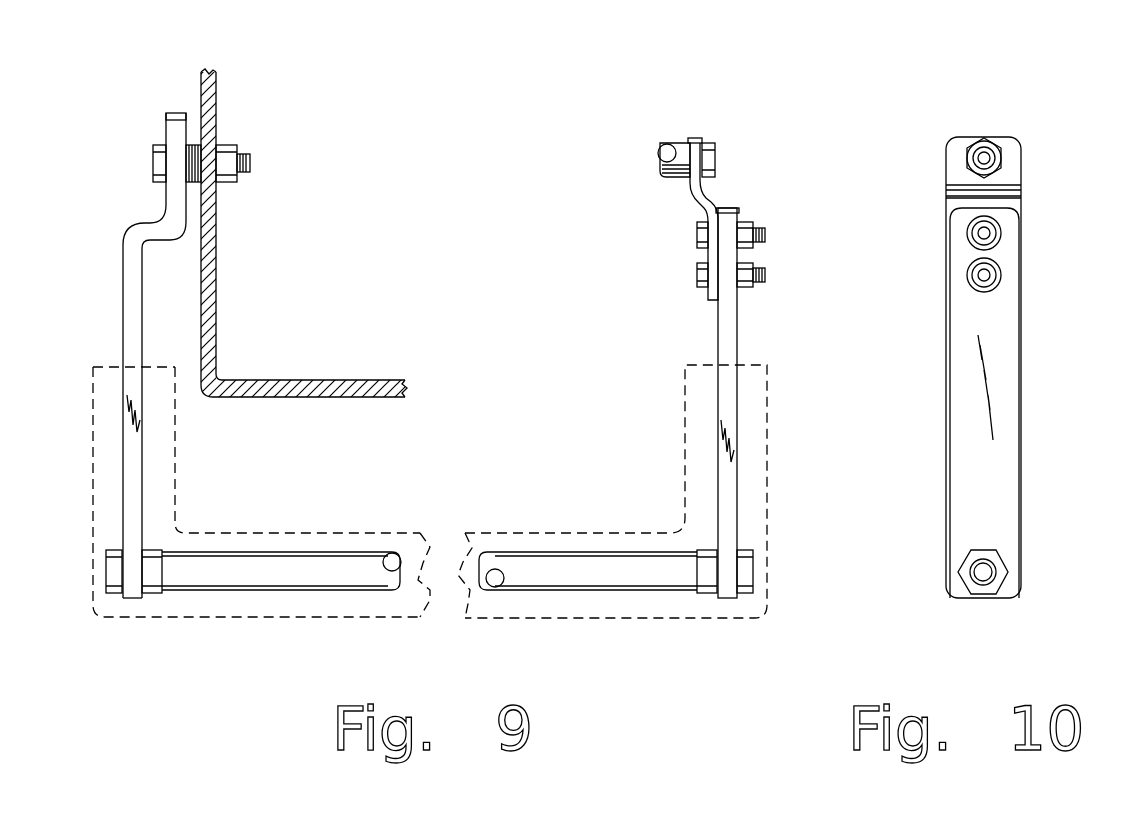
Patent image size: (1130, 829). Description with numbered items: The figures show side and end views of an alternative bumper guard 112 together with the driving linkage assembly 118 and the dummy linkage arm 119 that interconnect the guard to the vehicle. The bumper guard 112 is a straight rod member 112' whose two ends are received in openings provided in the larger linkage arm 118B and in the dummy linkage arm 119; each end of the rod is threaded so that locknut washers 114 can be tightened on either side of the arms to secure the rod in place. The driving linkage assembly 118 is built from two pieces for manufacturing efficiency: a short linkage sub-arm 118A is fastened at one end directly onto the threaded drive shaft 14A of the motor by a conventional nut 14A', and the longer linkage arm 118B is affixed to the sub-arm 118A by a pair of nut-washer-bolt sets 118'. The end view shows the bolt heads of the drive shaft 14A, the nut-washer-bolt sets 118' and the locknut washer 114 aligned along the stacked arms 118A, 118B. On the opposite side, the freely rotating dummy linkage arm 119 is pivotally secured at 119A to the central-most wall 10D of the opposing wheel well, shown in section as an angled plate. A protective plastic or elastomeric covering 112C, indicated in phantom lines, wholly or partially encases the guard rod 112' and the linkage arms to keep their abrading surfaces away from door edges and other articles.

In FIG. 9, the central-most wall 10D is at (201, 271).
In FIG. 9, the dummy linkage arm 119 is at (114, 264).
In FIG. 9, the bolt assembly fastening bracket to plate 119A is at (227, 134).
In FIG. 9, the straight rod member 112' is at (261, 492).
In FIG. 9, the bumper guard 112 is at (590, 637).
In FIG. 9, the protective covering 112C is at (685, 408).
In FIG. 10, the locknut washers 114 is at (983, 588).
In FIG. 9, the driving linkage assembly 118 is at (822, 393).
In FIG. 10, the driving linkage assembly 118 is at (1077, 408).
In FIG. 9, the linkage sub-arm 118A is at (690, 202).
In FIG. 10, the linkage sub-arm 118A is at (957, 147).
In FIG. 9, the linkage arm 118B is at (718, 335).
In FIG. 10, the linkage arm 118B is at (958, 420).
In FIG. 9, the nut-washer-bolt sets 118' is at (701, 254).
In FIG. 10, the nut-washer-bolt sets 118' is at (950, 254).
In FIG. 9, the drive shaft 14A is at (667, 132).
In FIG. 10, the drive shaft 14A is at (999, 138).
In FIG. 9, the nut 14A' is at (748, 154).
In FIG. 10, the nut 14A' is at (1047, 155).